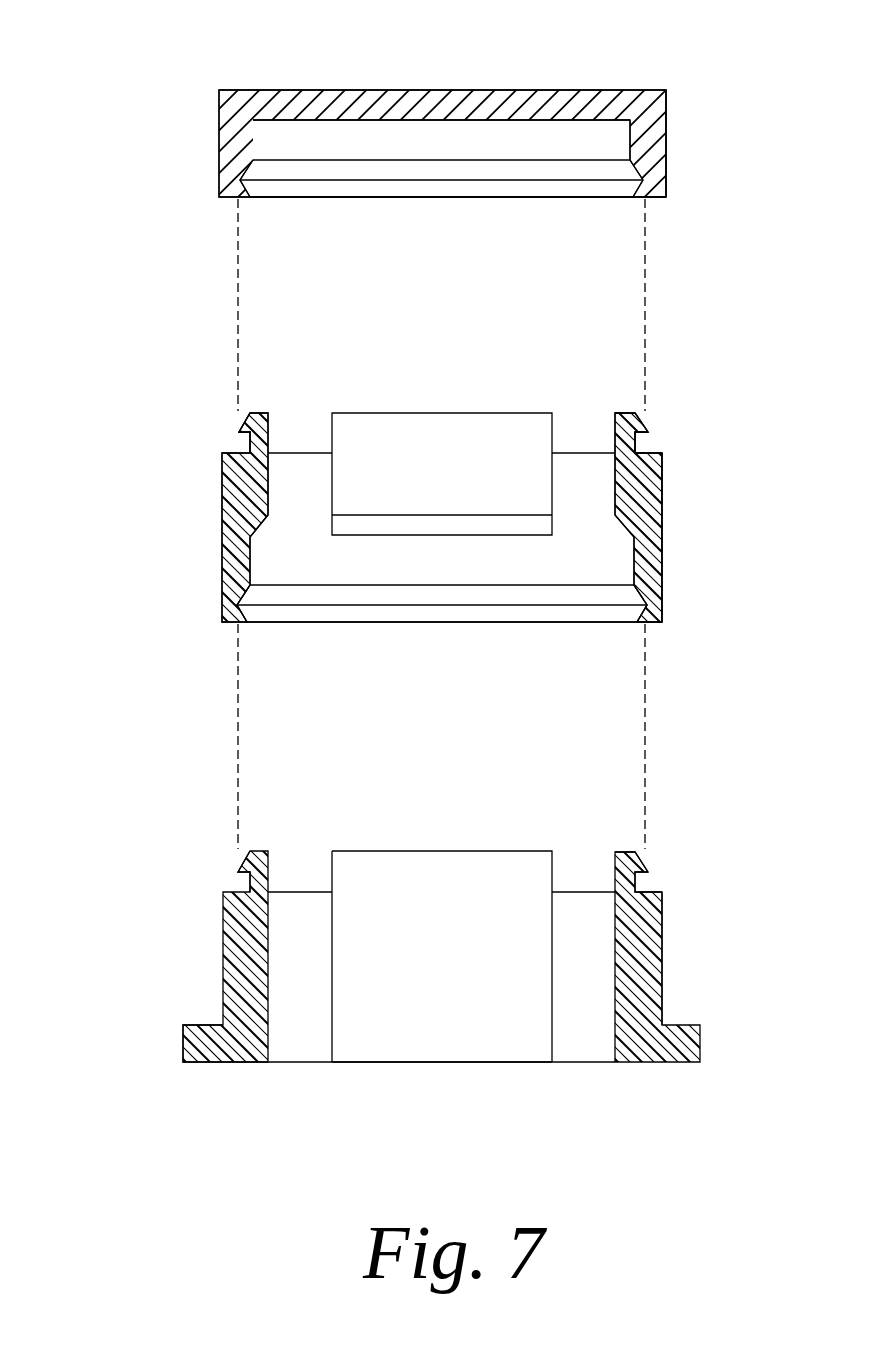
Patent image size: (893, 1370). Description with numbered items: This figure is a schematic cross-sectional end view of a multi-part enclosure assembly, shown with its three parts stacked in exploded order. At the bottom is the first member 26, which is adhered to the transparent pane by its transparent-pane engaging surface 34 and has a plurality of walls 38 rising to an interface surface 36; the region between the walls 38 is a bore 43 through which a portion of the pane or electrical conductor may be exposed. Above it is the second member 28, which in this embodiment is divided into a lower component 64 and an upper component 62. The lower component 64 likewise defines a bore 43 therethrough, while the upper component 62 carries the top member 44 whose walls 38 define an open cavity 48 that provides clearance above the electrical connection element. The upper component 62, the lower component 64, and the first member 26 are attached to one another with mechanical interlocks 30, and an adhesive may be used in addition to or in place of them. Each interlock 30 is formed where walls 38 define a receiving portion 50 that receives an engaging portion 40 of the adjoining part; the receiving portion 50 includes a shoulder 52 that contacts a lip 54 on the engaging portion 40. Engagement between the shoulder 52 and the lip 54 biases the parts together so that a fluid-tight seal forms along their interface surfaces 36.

The first member 26 is at (202, 950).
The second member 28 is at (147, 421).
The mechanical interlock 30 is at (632, 181).
The transparent-pane engaging surface 34 is at (223, 1068).
The interface surface 36 is at (659, 200).
The walls 38 is at (668, 128).
The engaging portion 40 is at (270, 848).
The bore 43 is at (432, 628).
The top member 44 is at (611, 90).
The open cavity 48 is at (431, 208).
The receiving portion 50 is at (326, 183).
The shoulder 52 is at (249, 187).
The lip 54 is at (247, 434).
The upper component 62 is at (212, 124).
The lower component 64 is at (212, 570).